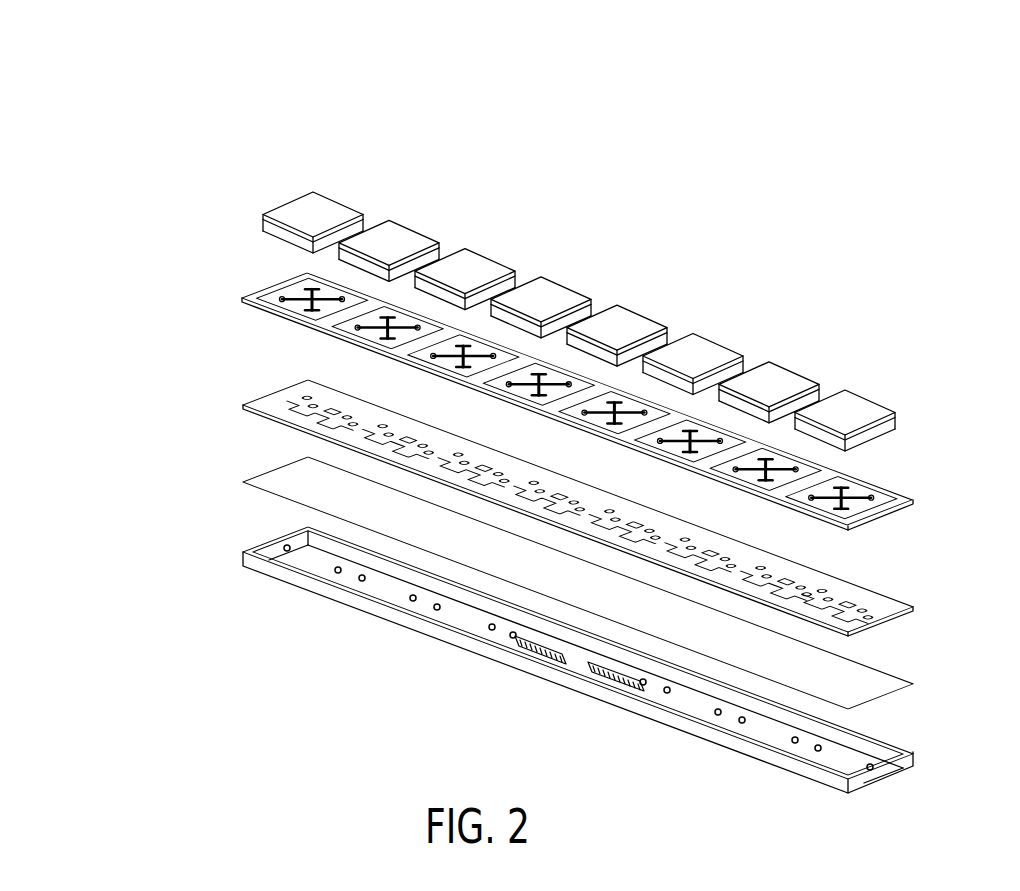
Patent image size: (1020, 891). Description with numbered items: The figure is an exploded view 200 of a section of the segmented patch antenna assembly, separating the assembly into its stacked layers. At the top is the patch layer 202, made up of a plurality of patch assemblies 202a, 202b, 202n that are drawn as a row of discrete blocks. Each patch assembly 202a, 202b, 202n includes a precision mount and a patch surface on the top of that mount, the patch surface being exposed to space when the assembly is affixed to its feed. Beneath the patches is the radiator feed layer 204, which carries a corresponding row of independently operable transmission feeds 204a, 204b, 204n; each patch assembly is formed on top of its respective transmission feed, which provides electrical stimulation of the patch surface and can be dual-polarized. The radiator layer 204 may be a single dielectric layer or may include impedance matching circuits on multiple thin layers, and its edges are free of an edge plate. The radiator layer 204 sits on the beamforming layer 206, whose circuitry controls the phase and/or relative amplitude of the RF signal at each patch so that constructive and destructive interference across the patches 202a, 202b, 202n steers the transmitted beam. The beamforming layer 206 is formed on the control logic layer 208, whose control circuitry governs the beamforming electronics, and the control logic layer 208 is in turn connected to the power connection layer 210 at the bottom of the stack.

The exploded view 200 is at (152, 127).
The patch layer 202 is at (250, 221).
The patch assembly 202a is at (303, 207).
The patch assembly 202b is at (385, 240).
The patch assembly 202n is at (849, 415).
The radiator feed layer 204 is at (228, 290).
The transmission feed 204a is at (293, 287).
The transmission feed 204b is at (330, 337).
The transmission feed 204n is at (880, 503).
The beamforming layer 206 is at (233, 391).
The control logic layer 208 is at (233, 486).
The power connection layer 210 is at (456, 663).